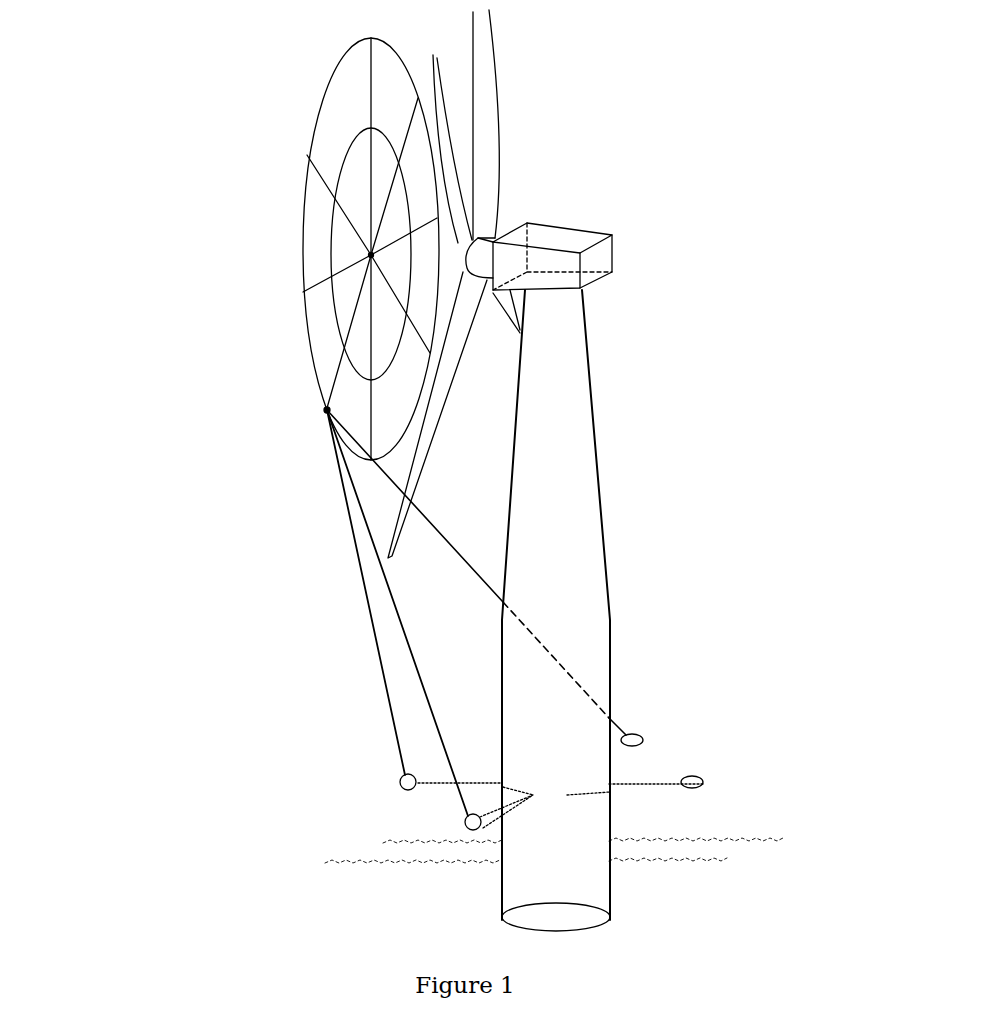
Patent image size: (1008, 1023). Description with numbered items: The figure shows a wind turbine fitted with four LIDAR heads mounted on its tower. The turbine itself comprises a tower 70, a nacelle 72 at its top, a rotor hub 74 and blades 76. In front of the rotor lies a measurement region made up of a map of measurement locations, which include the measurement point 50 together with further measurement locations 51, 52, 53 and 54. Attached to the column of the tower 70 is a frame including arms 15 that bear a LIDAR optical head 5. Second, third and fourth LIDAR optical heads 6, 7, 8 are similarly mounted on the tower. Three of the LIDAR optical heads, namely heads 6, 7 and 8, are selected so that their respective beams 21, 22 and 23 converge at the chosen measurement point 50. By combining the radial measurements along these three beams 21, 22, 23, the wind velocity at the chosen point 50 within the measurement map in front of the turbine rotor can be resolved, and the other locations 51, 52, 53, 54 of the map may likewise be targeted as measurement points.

The LIDAR optical head 5 is at (737, 688).
The second LIDAR optical head 6 is at (682, 544).
The third LIDAR optical head 7 is at (334, 781).
The fourth LIDAR optical head 8 is at (285, 745).
The arms 15 is at (605, 627).
The beam 21 is at (389, 572).
The beam 22 is at (258, 613).
The beam 23 is at (240, 592).
The measurement point 50 is at (191, 399).
The measurement location 51 is at (236, 249).
The measurement location 52 is at (245, 254).
The measurement location 53 is at (240, 183).
The measurement location 54 is at (290, 249).
The tower 70 is at (687, 554).
The nacelle 72 is at (691, 178).
The rotor hub 74 is at (437, 125).
The blades 76 is at (540, 125).